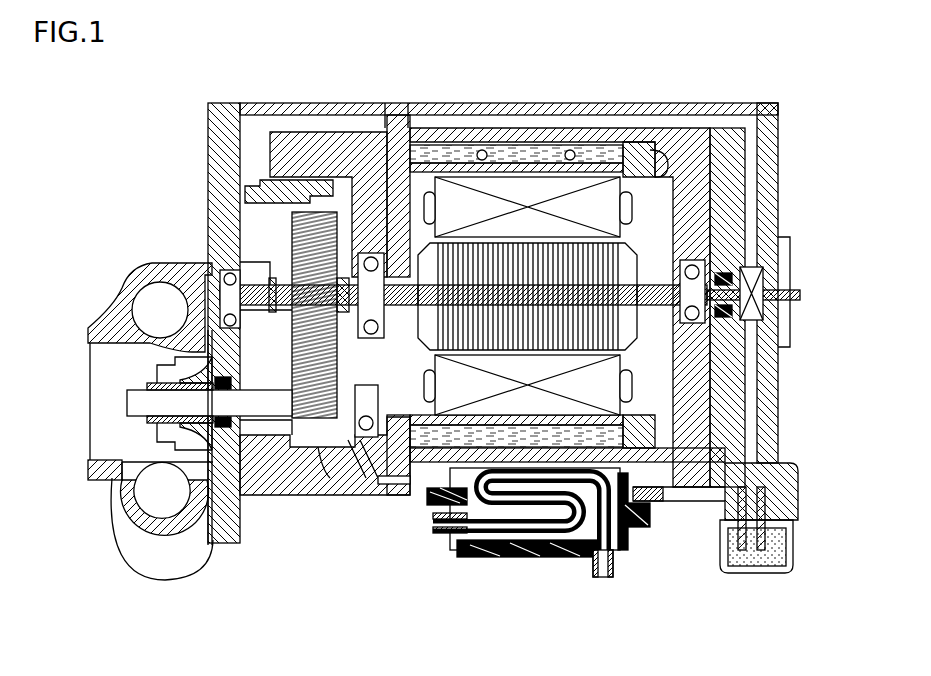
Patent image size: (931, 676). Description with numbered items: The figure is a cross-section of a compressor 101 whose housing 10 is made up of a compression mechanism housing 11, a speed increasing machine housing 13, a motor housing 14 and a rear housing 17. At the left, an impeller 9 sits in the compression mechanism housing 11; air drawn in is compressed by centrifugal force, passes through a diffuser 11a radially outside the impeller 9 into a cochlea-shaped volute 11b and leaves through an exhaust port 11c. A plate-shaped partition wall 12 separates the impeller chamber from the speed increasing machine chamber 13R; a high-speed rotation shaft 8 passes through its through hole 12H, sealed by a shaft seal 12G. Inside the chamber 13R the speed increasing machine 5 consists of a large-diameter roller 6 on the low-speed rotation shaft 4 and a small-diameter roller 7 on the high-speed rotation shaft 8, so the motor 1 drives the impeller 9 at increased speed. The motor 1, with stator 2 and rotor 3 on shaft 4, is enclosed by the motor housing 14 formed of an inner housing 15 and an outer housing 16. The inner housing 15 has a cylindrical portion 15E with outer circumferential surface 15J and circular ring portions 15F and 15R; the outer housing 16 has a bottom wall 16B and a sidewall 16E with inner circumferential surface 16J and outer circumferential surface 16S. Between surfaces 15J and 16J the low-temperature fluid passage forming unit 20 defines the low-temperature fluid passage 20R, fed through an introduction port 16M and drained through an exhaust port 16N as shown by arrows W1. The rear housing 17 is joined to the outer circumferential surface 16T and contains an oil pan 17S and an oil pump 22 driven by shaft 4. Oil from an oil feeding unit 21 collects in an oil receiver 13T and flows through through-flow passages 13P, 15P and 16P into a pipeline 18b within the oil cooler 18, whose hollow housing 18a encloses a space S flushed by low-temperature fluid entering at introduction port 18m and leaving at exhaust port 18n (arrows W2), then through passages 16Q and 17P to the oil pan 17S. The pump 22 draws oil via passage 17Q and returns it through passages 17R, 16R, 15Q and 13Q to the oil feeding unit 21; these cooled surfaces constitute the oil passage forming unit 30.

The compressor 101 is at (163, 118).
The housing 10 is at (264, 103).
The partition wall 12 is at (223, 126).
The speed increasing machine housing 13 is at (331, 150).
The through-flow passage 13Q is at (293, 128).
The speed increasing machine chamber 13R is at (280, 240).
The through-flow passage 13P is at (366, 456).
The oil receiver 13T is at (330, 448).
The through-flow passage 15P is at (392, 484).
The oil feeding unit 21 is at (248, 195).
The outer housing 16 is at (690, 170).
The rear housing 17 is at (729, 150).
The motor housing 14 is at (699, 70).
The inner housing 15 is at (641, 172).
The through-flow passage 16R is at (590, 136).
The exhaust port 16N is at (497, 155).
The introduction port 16M is at (557, 150).
The through-flow passage 15Q is at (379, 130).
The circular ring portion 15F is at (398, 120).
The low-temperature fluid passage 20R is at (426, 140).
The arrows W1 is at (570, 103).
The through-flow passage 17Q is at (752, 410).
The oil pan 17S is at (765, 565).
The through-flow passage 17P is at (706, 501).
The through-flow passage 16Q is at (660, 505).
The through-flow passage 17R is at (752, 188).
The oil passage forming unit 30 is at (752, 220).
The bottom wall 16B is at (707, 234).
The outer circumferential surface 16T is at (712, 386).
The circular ring portion 15R is at (650, 170).
The low-speed rotation shaft 4 is at (658, 302).
The shaft seal 12G is at (233, 416).
The through hole 12H is at (232, 378).
The oil pump 22 is at (755, 310).
The motor 1 is at (545, 296).
The rotor 3 is at (575, 265).
The stator 2 is at (628, 209).
The outer circumferential surface 15J is at (461, 168).
The inner circumferential surface 16J is at (530, 172).
The sidewall 16E is at (604, 175).
The cylindrical portion 15E is at (470, 182).
The through-flow passage 16P is at (450, 445).
The outer circumferential surface 16S is at (661, 440).
The speed increasing machine 5 is at (307, 397).
The small-diameter roller 7 is at (300, 420).
The large-diameter roller 6 is at (318, 425).
The high-speed rotation shaft 8 is at (262, 400).
The compression mechanism housing 11 is at (176, 263).
The exhaust port 11c is at (118, 535).
The volute 11b is at (150, 515).
The diffuser 11a is at (213, 490).
The impeller 9 is at (165, 505).
The low-temperature fluid passage forming unit 20 is at (551, 553).
The oil cooler 18 is at (537, 553).
The hollow housing 18a is at (492, 545).
The pipeline 18b is at (531, 535).
The introduction port 18m is at (446, 537).
The exhaust port 18n is at (582, 578).
The space S is at (612, 532).
The arrows W2 is at (605, 560).